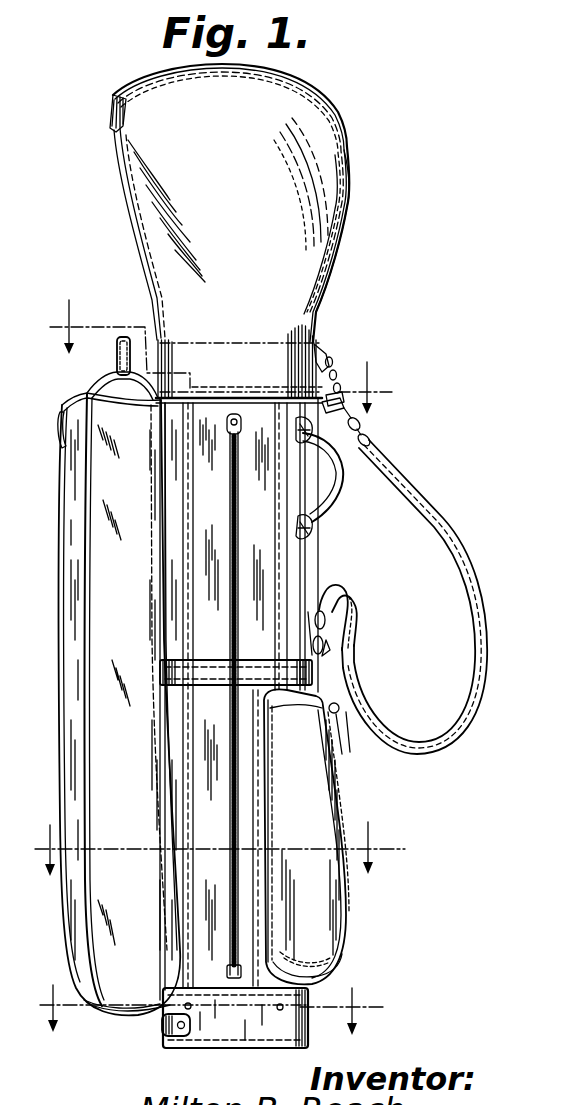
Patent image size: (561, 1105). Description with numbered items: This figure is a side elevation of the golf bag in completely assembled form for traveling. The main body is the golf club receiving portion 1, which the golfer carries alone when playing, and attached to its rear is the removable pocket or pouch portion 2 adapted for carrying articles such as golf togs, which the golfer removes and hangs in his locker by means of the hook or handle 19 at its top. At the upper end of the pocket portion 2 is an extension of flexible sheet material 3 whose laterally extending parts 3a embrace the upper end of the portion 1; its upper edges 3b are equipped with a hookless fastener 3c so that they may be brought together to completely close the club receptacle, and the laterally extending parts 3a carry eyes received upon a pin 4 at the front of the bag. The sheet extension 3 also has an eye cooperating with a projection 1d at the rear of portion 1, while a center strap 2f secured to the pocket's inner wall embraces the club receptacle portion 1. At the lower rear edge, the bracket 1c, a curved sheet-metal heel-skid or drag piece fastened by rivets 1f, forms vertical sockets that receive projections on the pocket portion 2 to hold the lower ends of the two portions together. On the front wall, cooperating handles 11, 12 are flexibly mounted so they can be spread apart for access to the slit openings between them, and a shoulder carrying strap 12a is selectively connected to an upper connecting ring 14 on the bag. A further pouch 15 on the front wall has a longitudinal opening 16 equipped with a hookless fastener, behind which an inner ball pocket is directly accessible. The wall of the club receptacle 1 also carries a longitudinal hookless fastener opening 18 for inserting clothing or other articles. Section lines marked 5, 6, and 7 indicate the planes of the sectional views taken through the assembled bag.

The golf club receiving portion 1 is at (268, 577).
The bracket 1c is at (165, 1046).
The projection 1d is at (156, 370).
The rivets 1f is at (163, 1028).
The removable pocket or pouch portion 2 is at (82, 660).
The center strap 2f is at (196, 672).
The extension of flexible sheet material 3 is at (298, 108).
The laterally extending parts 3a is at (236, 376).
The upper edges of the sheet 3b is at (150, 76).
The hookless fastener 3c is at (326, 357).
The pin 4 is at (338, 388).
The section line 5- 5 is at (224, 357).
The section line 6- 6 is at (221, 849).
The section line 7- 7 is at (212, 1010).
The handle 11 is at (332, 486).
The handle 12 is at (330, 508).
The shoulder carrying strap 12a is at (430, 501).
The upper connecting ring 14 is at (343, 411).
The pouch 15 is at (338, 813).
The longitudinal opening 16 is at (343, 754).
The longitudinal hookless fastener opening 18 is at (243, 500).
The hook or handle 19 is at (124, 337).